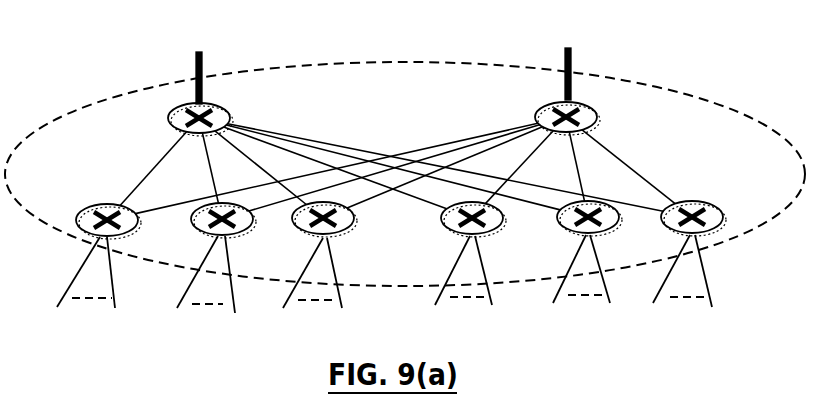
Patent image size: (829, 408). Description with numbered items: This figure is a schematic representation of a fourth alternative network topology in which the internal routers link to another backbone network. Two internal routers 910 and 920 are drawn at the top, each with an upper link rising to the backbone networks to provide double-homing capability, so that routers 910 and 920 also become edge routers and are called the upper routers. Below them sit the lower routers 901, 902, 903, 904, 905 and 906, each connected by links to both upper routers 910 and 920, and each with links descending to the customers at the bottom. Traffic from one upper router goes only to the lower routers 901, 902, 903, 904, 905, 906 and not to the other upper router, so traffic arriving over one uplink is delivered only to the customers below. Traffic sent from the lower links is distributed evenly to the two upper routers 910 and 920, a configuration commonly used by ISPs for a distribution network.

The internal router 910 is at (220, 107).
The internal router 920 is at (595, 103).
The subscriber station 901 is at (84, 232).
The subscriber station 902 is at (200, 236).
The subscriber station 903 is at (298, 230).
The subscriber station 904 is at (497, 230).
The subscriber station 905 is at (618, 226).
The subscriber station 906 is at (720, 225).